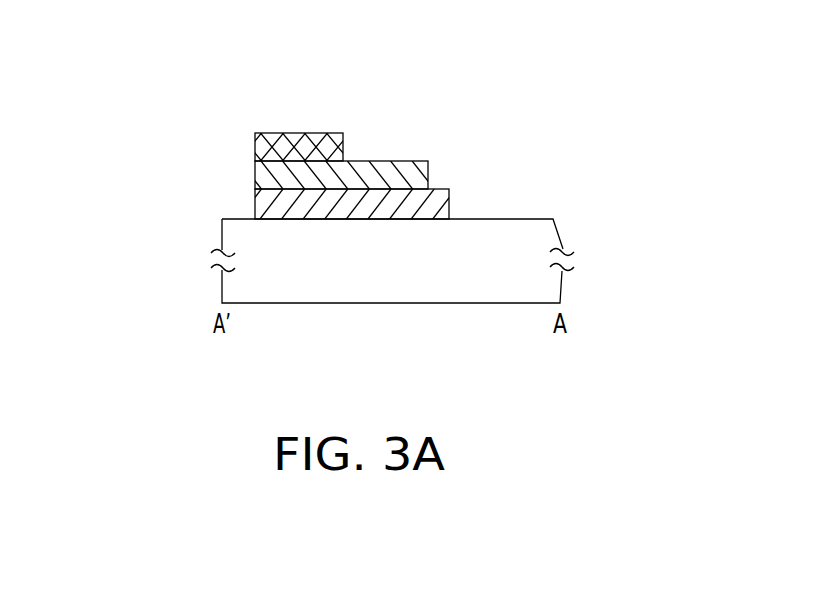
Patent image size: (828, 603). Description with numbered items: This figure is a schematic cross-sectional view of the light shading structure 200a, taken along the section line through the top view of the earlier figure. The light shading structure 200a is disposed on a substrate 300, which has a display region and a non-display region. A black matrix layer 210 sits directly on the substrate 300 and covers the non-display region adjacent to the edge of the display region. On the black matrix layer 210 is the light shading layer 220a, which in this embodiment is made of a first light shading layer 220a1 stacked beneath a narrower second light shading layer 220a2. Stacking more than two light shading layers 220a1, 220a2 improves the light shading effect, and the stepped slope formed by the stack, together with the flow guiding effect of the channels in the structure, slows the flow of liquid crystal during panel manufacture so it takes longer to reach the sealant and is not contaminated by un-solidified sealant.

The light shading structure 200a is at (267, 101).
The light shading layer 220a is at (254, 138).
The first light shading layer 220a1 is at (268, 175).
The second light shading layer 220a2 is at (258, 147).
The black matrix layer 210 is at (262, 210).
The substrate 300 is at (237, 288).